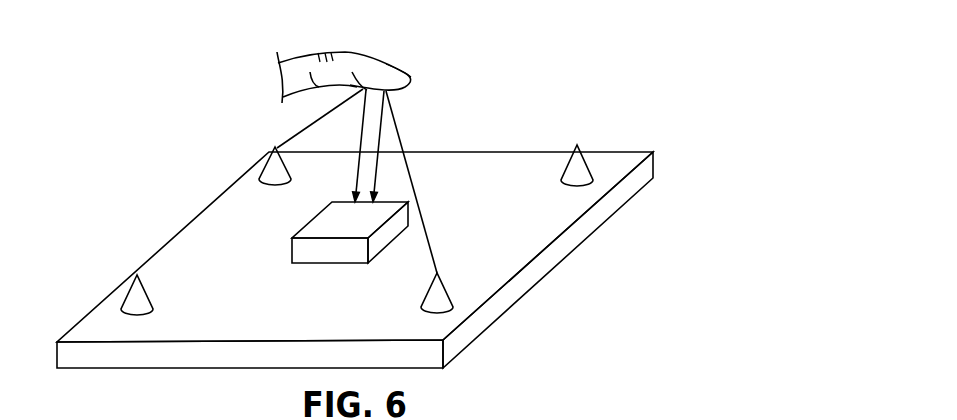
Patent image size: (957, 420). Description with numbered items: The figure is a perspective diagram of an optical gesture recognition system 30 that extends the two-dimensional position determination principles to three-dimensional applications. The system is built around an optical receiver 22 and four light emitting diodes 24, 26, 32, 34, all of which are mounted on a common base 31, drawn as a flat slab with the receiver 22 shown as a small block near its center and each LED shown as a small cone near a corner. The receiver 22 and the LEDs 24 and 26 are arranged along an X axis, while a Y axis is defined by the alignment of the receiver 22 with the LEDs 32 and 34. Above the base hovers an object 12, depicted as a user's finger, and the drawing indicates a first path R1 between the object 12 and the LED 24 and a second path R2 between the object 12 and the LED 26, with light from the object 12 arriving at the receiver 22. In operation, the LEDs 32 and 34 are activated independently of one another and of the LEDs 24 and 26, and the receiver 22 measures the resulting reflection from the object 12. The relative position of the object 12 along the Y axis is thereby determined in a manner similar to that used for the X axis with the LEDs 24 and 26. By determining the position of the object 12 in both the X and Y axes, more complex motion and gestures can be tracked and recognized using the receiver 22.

The object 12 is at (410, 70).
The optical receiver 22 is at (362, 230).
The light emitting diode 24 is at (262, 166).
The light emitting diode 26 is at (445, 287).
The optical gesture recognition system 30 is at (540, 48).
The common base 31 is at (560, 252).
The light emitting diode 32 is at (128, 285).
The light emitting diode 34 is at (585, 160).
The range from finger to transducer 24 R1 is at (312, 123).
The range from finger to transducer 26 R2 is at (398, 125).